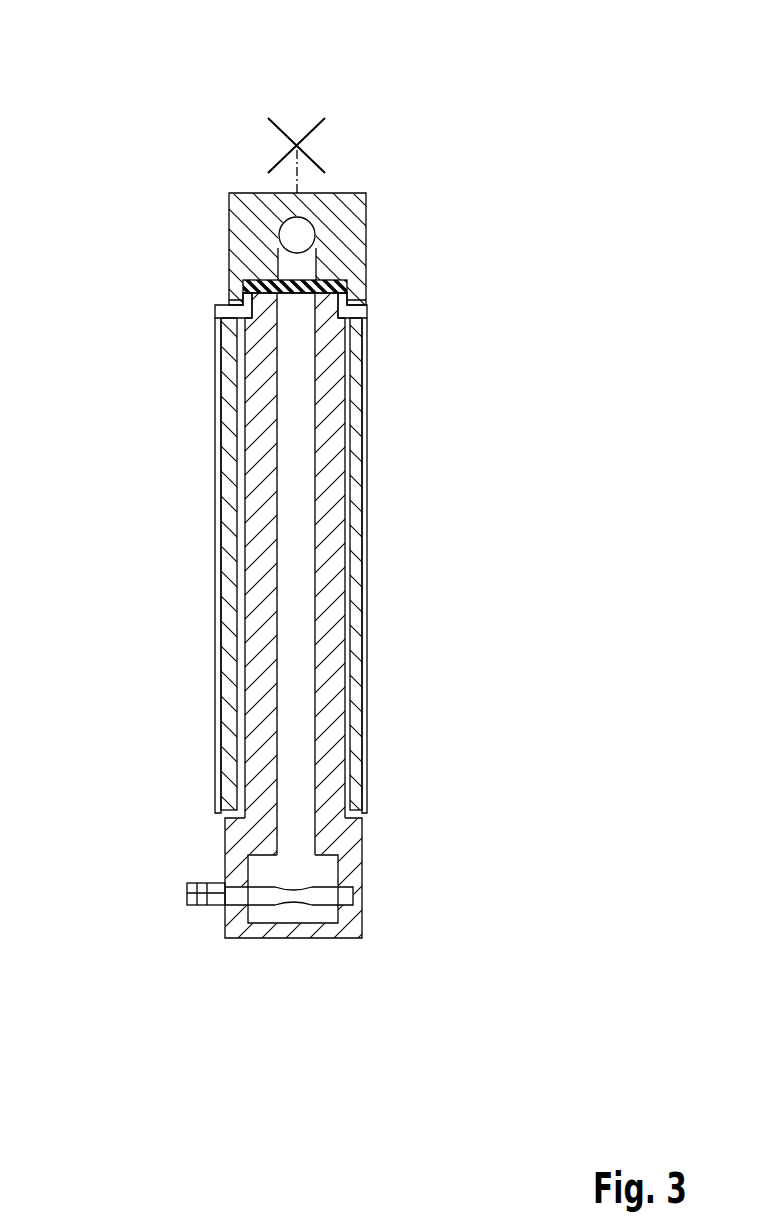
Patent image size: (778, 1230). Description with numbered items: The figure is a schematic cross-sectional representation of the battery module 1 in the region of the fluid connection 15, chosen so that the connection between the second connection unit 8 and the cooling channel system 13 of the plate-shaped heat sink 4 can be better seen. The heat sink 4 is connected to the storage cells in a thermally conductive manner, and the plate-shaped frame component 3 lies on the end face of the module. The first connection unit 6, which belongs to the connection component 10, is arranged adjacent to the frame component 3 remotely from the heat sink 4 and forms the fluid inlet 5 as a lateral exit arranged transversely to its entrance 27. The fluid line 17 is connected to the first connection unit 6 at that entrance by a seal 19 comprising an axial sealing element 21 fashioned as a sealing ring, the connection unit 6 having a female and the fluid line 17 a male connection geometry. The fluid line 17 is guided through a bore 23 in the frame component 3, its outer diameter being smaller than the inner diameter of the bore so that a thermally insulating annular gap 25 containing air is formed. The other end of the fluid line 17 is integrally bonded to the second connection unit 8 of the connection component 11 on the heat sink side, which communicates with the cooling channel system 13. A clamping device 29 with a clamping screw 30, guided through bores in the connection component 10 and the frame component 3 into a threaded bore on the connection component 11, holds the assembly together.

The battery module 1 is at (163, 89).
The plate-shaped frame component 3 is at (228, 682).
The plate-shaped heat sink 4 is at (190, 904).
The fluid inlet 5 is at (287, 238).
The first connection unit 6 is at (342, 218).
The second connection unit 8 is at (293, 938).
The connection component 10 is at (357, 186).
The connection component 11 is at (346, 946).
The cooling channel system 13 is at (210, 905).
The fluid connection 15 is at (237, 533).
The fluid line 17 is at (260, 568).
The seal 19 is at (238, 266).
The axial sealing element 21 is at (250, 287).
The bore 23 is at (238, 725).
The annular gap 25 is at (240, 633).
The entrance 27 is at (308, 270).
The clamping device 29 is at (305, 126).
The clamping screw 30 is at (295, 190).